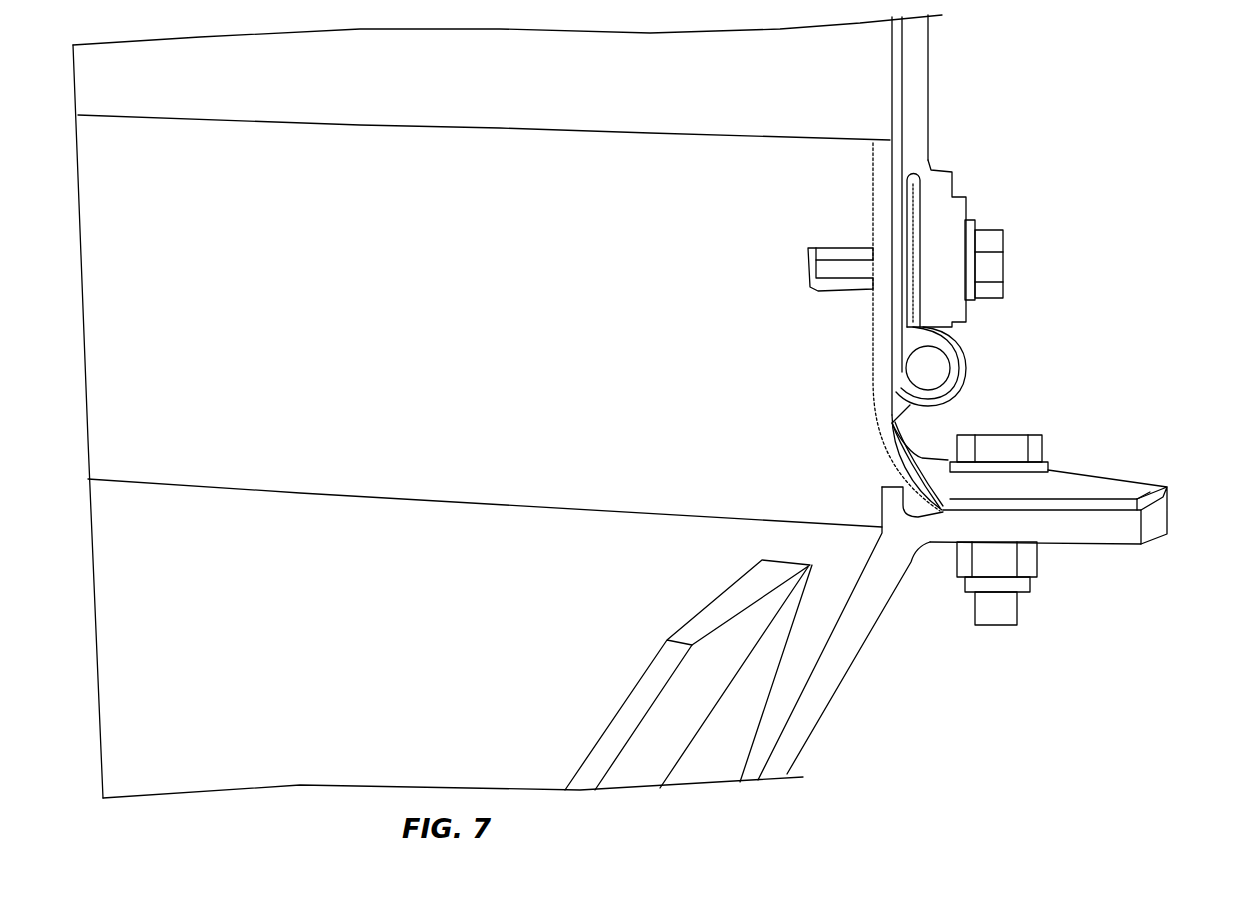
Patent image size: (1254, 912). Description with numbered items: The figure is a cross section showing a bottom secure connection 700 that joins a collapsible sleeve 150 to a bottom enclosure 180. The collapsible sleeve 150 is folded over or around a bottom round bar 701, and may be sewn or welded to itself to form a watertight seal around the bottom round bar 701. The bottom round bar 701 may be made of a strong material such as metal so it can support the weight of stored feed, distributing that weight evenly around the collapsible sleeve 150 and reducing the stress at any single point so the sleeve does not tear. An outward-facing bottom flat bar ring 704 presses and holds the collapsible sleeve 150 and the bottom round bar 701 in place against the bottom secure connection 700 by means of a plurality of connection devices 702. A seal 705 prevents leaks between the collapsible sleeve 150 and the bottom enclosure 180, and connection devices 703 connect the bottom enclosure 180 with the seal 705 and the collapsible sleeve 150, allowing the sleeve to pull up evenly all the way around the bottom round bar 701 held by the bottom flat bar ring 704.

The collapsible sleeve 150 is at (913, 70).
The bottom enclosure 180 is at (808, 686).
The bottom secure connection 700 is at (1161, 163).
The bottom round bar 701 is at (928, 368).
The connection devices 702 is at (988, 267).
The connection devices 703 is at (995, 560).
The bottom flat bar ring 704 is at (965, 307).
The seal 705 is at (882, 353).